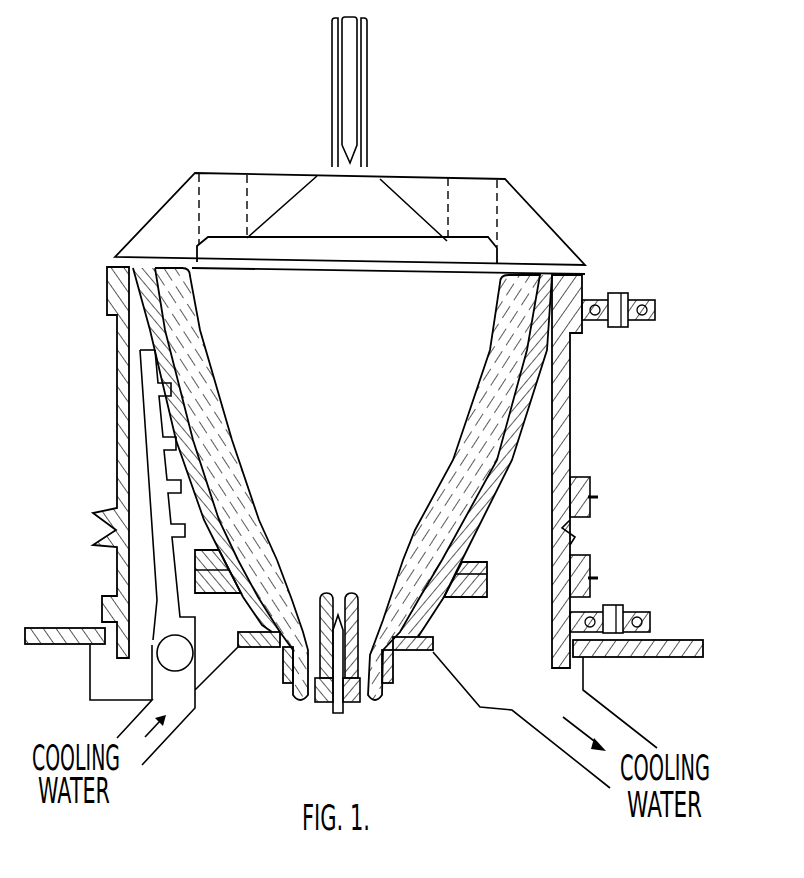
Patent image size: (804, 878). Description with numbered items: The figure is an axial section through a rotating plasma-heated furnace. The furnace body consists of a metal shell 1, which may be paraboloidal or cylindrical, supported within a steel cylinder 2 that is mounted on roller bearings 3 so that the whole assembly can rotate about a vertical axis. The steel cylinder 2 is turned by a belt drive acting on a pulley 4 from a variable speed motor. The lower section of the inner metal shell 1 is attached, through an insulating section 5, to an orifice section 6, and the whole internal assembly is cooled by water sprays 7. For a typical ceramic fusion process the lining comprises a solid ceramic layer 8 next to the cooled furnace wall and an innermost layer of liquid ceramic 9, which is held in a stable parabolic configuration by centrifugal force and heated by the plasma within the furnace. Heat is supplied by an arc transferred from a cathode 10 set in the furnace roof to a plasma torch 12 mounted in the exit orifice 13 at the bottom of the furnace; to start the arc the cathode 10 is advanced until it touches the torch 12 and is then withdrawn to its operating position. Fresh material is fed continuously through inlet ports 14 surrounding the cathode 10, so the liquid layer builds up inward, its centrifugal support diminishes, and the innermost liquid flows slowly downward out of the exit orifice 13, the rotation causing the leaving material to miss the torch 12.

The metal shell 1 is at (525, 368).
The steel cylinder 2 is at (558, 413).
The roller bearings 3 is at (592, 508).
The pulley 4 is at (568, 537).
The insulating section 5 is at (480, 577).
The orifice section 6 is at (424, 619).
The water sprays 7 is at (152, 452).
The solid ceramic layer 8 is at (210, 463).
The liquid ceramic 9 is at (260, 537).
The cathode 10 is at (350, 100).
The plasma torch 12 is at (347, 702).
The exit orifice 13 is at (313, 702).
The inlet ports 14 is at (225, 166).